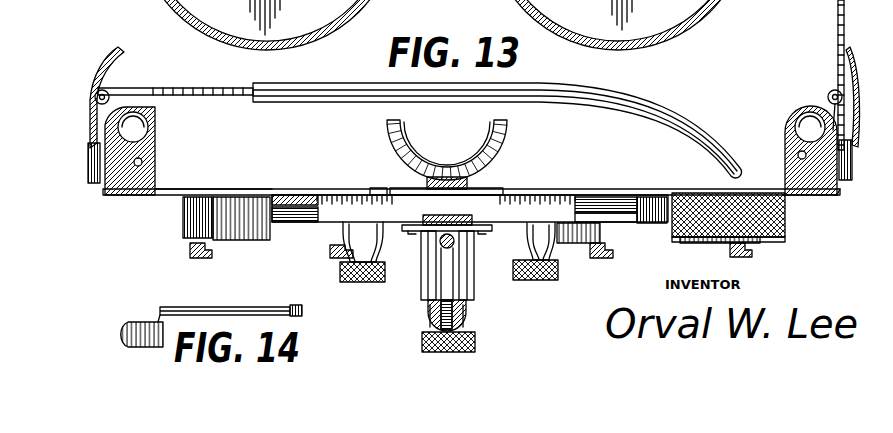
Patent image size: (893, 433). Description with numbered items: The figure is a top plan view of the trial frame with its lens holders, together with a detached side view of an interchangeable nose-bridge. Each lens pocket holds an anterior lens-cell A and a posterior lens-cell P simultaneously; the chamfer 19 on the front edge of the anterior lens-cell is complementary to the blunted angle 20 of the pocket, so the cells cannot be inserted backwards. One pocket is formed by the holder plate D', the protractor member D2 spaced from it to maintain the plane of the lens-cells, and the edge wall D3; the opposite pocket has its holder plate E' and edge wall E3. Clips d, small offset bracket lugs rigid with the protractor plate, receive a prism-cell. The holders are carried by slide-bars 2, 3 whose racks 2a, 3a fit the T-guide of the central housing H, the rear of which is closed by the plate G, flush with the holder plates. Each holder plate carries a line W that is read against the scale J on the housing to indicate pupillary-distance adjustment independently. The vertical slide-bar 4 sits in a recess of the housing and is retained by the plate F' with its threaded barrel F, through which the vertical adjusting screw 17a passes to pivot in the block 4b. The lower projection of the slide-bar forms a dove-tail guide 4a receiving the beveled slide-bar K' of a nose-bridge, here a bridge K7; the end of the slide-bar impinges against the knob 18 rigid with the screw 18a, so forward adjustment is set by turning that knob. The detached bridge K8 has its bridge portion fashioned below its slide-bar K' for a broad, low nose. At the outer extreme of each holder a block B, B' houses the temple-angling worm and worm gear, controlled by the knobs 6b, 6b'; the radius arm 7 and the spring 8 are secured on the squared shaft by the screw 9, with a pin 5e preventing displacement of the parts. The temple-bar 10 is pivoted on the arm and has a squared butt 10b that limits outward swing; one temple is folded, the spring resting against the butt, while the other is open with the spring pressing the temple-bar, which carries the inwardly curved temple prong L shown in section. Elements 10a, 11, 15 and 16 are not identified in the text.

In FIG. 13, the anterior lens-cell A is at (786, 226).
In FIG. 13, the block B is at (793, 142).
In FIG. 13, the block B' is at (147, 151).
In FIG. 13, the posterior lens-cell P is at (786, 205).
In FIG. 13, the temple prong L is at (518, 103).
In FIG. 13, the plate G is at (420, 189).
In FIG. 13, the line W is at (380, 189).
In FIG. 13, the central housing H is at (443, 208).
In FIG. 13, the scale J is at (398, 213).
In FIG. 13, the threaded barrel F is at (442, 247).
In FIG. 13, the plate F' is at (457, 250).
In FIG. 13, the slide-bar K' is at (476, 328).
In FIG. 14, the slide-bar K' is at (230, 295).
In FIG. 13, the nose-bridge K7 is at (441, 164).
In FIG. 14, the nose-bridge K8 is at (140, 324).
In FIG. 13, the holder plate E' is at (672, 188).
In FIG. 13, the edge wall E3 is at (660, 30).
In FIG. 13, the holder plate D' is at (213, 172).
In FIG. 13, the protractor member D2 is at (254, 240).
In FIG. 13, the edge wall D3 is at (183, 218).
In FIG. 13, the clip d is at (190, 253).
In FIG. 13, the slide-bar 2 is at (310, 203).
In FIG. 13, the rack 2a is at (287, 202).
In FIG. 13, the slide-bar 3 is at (586, 196).
In FIG. 13, the rack 3a is at (607, 210).
In FIG. 13, the vertical slide-bar 4 is at (470, 215).
In FIG. 13, the guide 4a is at (422, 284).
In FIG. 13, the block 4b is at (462, 284).
In FIG. 13, the pin 5e is at (798, 155).
In FIG. 13, the knob 6b is at (793, 102).
In FIG. 13, the knob 6b' is at (159, 135).
In FIG. 13, the radius arm 7 is at (836, 196).
In FIG. 13, the spring 8 is at (118, 47).
In FIG. 13, the screw 9 is at (92, 185).
In FIG. 13, the temple-bar 10 is at (187, 88).
In FIG. 13, the pivot 10a is at (837, 6).
In FIG. 13, the squared butt 10b is at (100, 89).
In FIG. 13, the arm 11 is at (310, 83).
In FIG. 13, the knurled knob 15 is at (343, 275).
In FIG. 13, the knurled knob 16 is at (558, 272).
In FIG. 13, the vertical adjusting screw 17a is at (468, 248).
In FIG. 13, the knob 18 is at (423, 343).
In FIG. 13, the screw 18a is at (430, 318).
In FIG. 13, the chamfer 19 is at (786, 240).
In FIG. 13, the blunted angle 20 is at (560, 240).